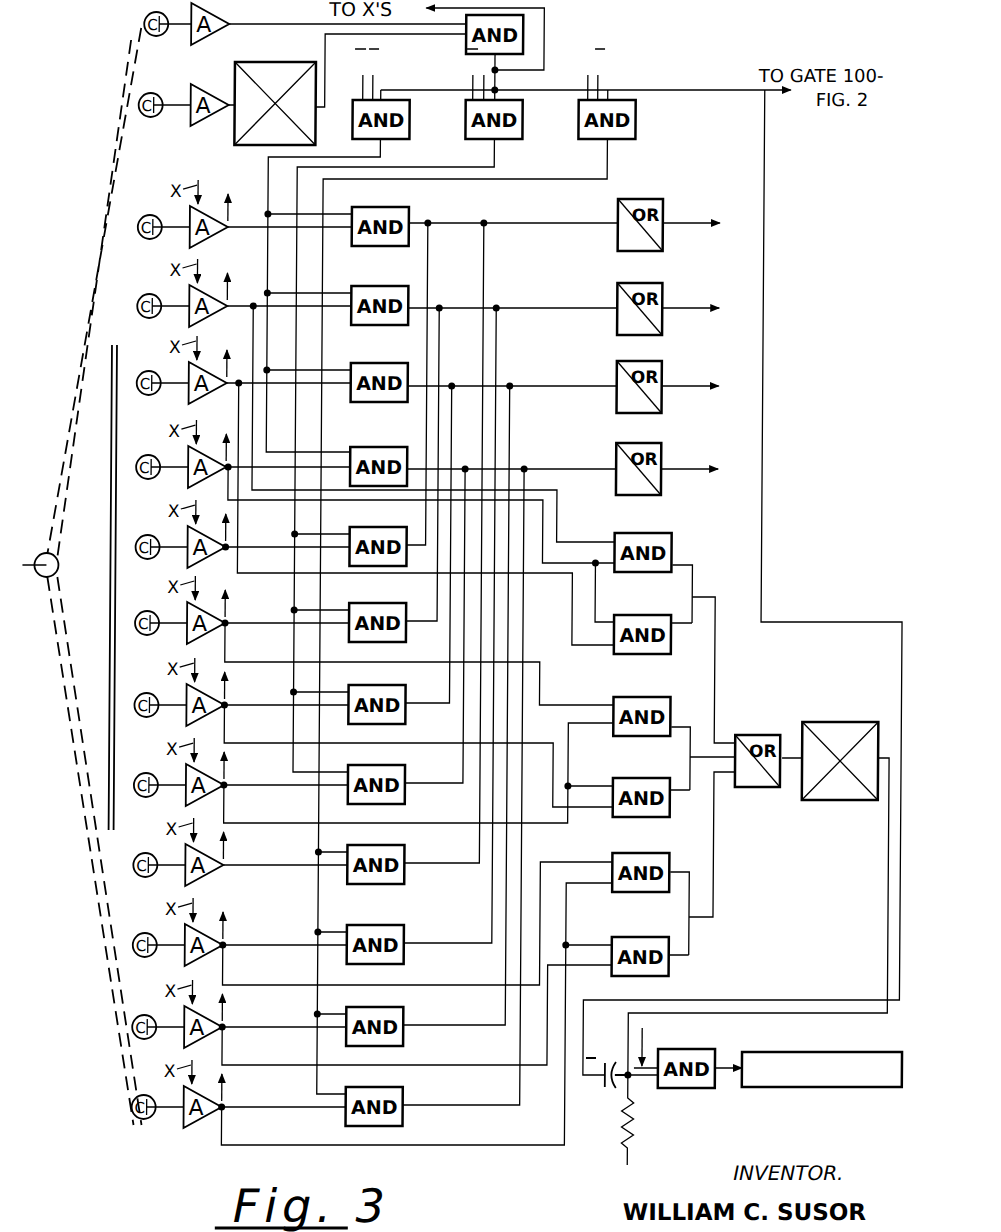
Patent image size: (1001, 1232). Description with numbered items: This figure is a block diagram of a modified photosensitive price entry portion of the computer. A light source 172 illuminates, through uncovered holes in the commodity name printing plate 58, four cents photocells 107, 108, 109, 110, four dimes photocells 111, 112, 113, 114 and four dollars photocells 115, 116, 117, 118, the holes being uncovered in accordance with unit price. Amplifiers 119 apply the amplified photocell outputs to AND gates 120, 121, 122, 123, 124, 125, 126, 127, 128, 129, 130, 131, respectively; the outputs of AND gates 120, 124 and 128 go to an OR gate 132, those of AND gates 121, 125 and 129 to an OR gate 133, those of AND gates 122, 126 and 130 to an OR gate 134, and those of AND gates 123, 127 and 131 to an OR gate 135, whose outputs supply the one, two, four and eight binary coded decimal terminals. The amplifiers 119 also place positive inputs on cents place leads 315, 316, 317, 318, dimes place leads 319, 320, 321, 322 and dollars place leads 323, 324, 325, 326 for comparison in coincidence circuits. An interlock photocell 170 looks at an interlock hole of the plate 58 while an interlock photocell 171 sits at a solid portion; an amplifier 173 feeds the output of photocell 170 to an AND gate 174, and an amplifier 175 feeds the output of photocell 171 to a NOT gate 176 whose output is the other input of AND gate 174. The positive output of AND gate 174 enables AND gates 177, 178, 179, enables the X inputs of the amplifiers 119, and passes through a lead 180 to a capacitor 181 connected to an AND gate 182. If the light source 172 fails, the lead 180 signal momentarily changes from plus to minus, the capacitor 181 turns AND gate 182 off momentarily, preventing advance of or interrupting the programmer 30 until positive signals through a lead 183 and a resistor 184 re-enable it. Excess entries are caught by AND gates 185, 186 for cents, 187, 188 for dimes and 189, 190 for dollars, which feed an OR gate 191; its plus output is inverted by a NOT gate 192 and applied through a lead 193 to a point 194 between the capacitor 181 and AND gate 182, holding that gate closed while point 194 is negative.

The programmer 30 is at (835, 1052).
The commodity name printing plate 58 is at (112, 530).
The cents photocell 107 is at (156, 214).
The cents photocell 108 is at (156, 293).
The cents photocell 109 is at (156, 370).
The cents photocell 110 is at (156, 454).
The dimes photocell 111 is at (156, 534).
The dimes photocell 112 is at (156, 610).
The dimes photocell 113 is at (156, 692).
The dimes photocell 114 is at (156, 772).
The dollars photocell 115 is at (156, 852).
The dollars photocell 116 is at (156, 932).
The dollars photocell 117 is at (155, 1040).
The dollars photocell 118 is at (138, 1118).
The amplifier 119 is at (214, 236).
The AND gate 120 is at (398, 207).
The AND gate 121 is at (366, 286).
The AND gate 122 is at (366, 363).
The AND gate 123 is at (366, 447).
The AND gate 124 is at (366, 527).
The AND gate 125 is at (366, 603).
The AND gate 126 is at (396, 685).
The AND gate 127 is at (396, 765).
The AND gate 128 is at (396, 845).
The AND gate 129 is at (396, 925).
The AND gate 130 is at (396, 1007).
The AND gate 131 is at (396, 1087).
The OR gate 132 is at (620, 207).
The OR gate 133 is at (620, 291).
The OR gate 134 is at (620, 368).
The OR gate 135 is at (620, 450).
The interlock photocell 170 is at (143, 21).
The interlock photocell 171 is at (158, 94).
The light source 172 is at (56, 577).
The amplifier 173 is at (216, 17).
The AND gate 174 is at (522, 40).
The amplifier 175 is at (193, 122).
The NOT gate 176 is at (262, 64).
The AND gate 177 is at (406, 139).
The AND gate 178 is at (519, 139).
The AND gate 179 is at (634, 139).
The lead 180 is at (766, 380).
The capacitor 181 is at (606, 1088).
The AND gate 182 is at (696, 1049).
The lead 183 is at (646, 1054).
The resistor 184 is at (640, 1138).
The AND gate 185 is at (622, 533).
The AND gate 186 is at (622, 615).
The AND gate 187 is at (622, 697).
The AND gate 188 is at (622, 778).
The AND gate 189 is at (620, 853).
The AND gate 190 is at (620, 937).
The OR gate 191 is at (746, 735).
The NOT gate 192 is at (826, 722).
The lead 193 is at (886, 882).
The point 194 is at (636, 1084).
The cents place lead 315 is at (233, 209).
The cents place lead 316 is at (233, 288).
The cents place lead 317 is at (233, 365).
The cents place lead 318 is at (229, 449).
The dimes place lead 319 is at (233, 533).
The dimes place lead 320 is at (233, 609).
The dimes place lead 321 is at (233, 691).
The dimes place lead 322 is at (230, 777).
The dollars place lead 323 is at (230, 857).
The dollars place lead 324 is at (230, 937).
The dollars place lead 325 is at (230, 1019).
The dollars place lead 326 is at (230, 1099).